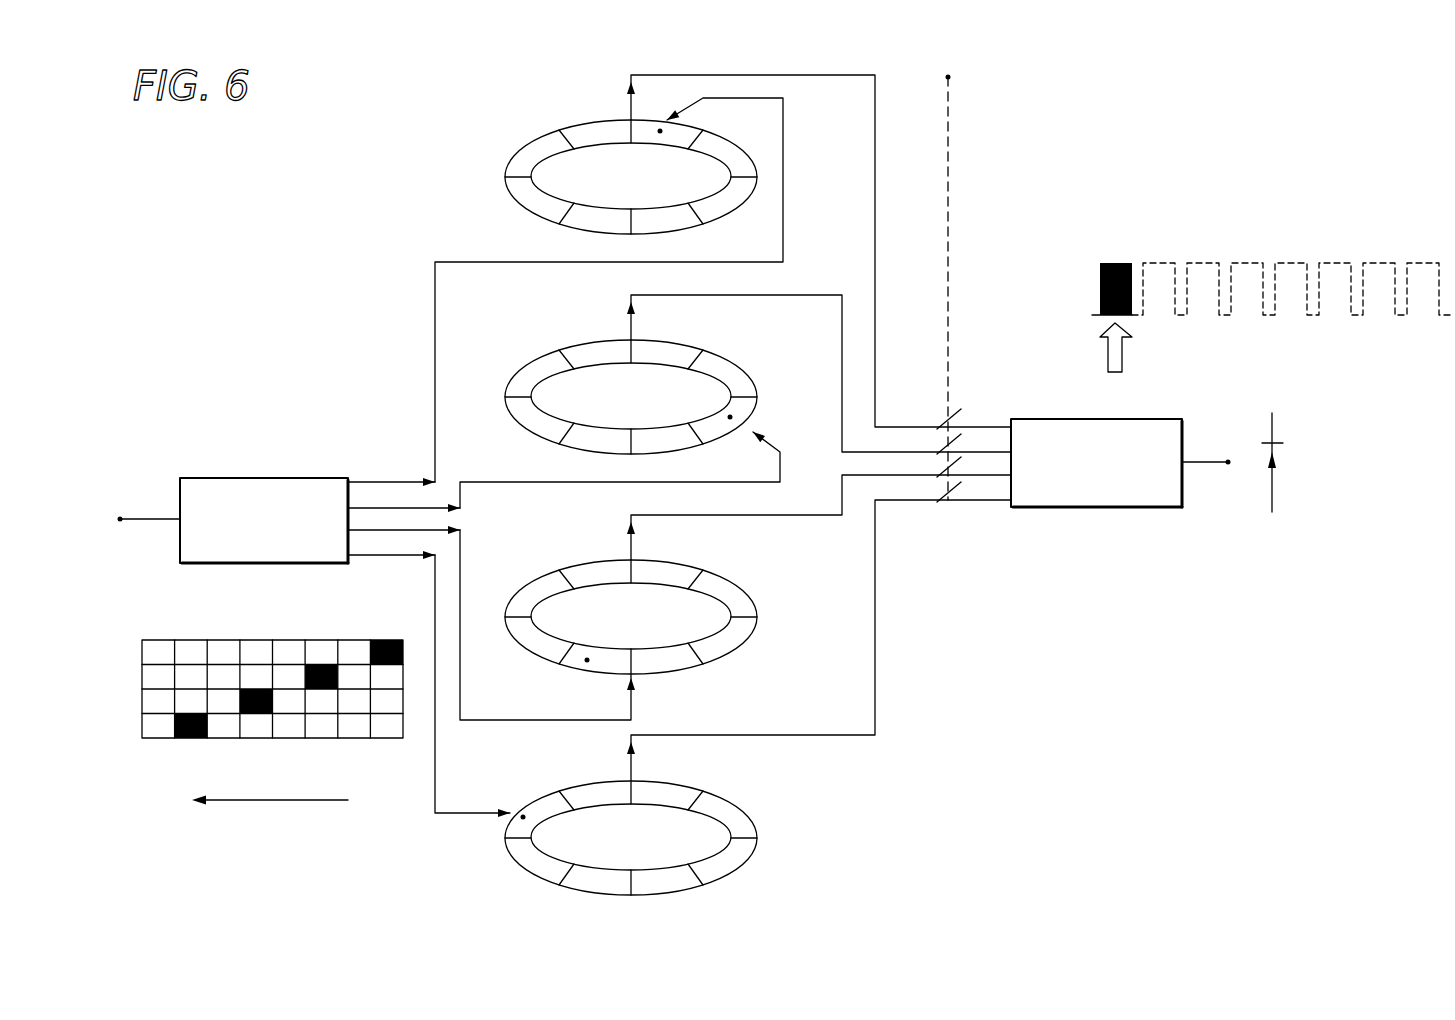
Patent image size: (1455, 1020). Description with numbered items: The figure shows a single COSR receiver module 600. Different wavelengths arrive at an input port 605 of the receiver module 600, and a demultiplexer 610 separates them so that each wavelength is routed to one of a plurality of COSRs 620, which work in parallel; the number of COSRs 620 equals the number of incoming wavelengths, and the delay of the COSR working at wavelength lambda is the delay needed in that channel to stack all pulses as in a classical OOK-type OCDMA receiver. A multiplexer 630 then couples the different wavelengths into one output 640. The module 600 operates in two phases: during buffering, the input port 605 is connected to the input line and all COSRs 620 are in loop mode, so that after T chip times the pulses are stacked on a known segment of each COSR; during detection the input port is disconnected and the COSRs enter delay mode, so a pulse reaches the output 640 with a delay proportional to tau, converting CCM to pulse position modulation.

The COSR receiver module 600 is at (1060, 739).
The input port 605 is at (120, 519).
The demultiplexer 610 is at (263, 478).
The COSRs 620 is at (505, 177).
The multiplexer 630 is at (1093, 507).
The output 640 is at (1228, 462).